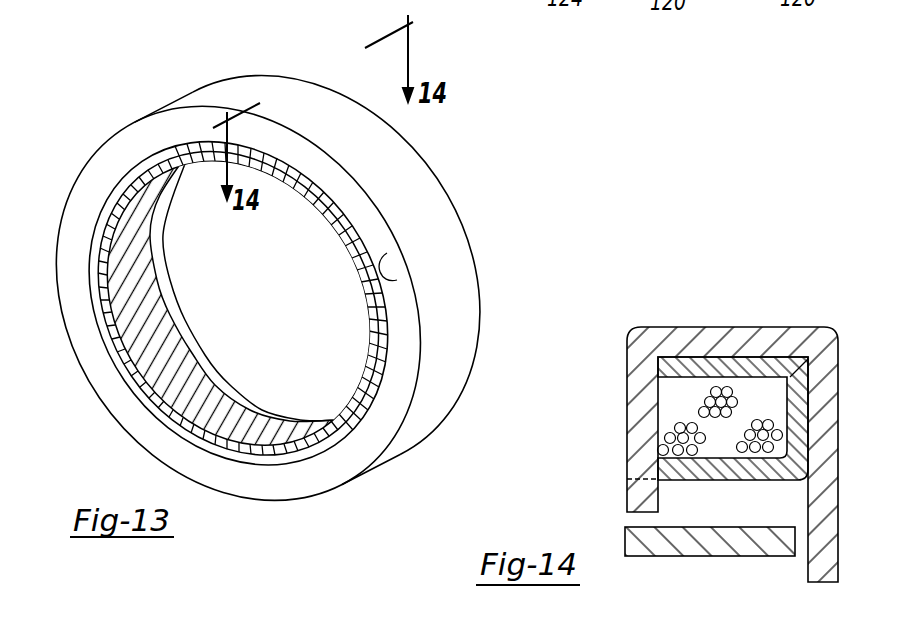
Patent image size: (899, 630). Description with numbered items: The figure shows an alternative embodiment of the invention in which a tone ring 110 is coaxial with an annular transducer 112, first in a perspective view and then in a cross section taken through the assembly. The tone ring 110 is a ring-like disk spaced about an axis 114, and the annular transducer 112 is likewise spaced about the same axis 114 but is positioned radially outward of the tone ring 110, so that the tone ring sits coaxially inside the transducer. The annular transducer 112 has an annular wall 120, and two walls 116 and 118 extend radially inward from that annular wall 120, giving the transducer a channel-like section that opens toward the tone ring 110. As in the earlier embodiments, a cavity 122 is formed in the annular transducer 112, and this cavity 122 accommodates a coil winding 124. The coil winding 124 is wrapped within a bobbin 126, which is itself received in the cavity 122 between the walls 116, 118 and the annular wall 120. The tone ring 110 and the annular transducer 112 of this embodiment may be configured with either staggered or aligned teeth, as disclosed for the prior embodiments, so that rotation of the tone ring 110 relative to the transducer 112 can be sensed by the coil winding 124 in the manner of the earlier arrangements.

In FIG. 13, the tone ring 110 is at (126, 244).
In FIG. 14, the tone ring 110 is at (683, 543).
In FIG. 13, the annular transducer 112 is at (397, 173).
In FIG. 13, the axis 114 is at (283, 276).
In FIG. 13, the wall 116 is at (393, 280).
In FIG. 14, the wall 116 is at (637, 383).
In FIG. 14, the wall 118 is at (832, 432).
In FIG. 13, the annular wall 120 is at (457, 302).
In FIG. 14, the annular wall 120 is at (755, 340).
In FIG. 14, the cavity 122 is at (767, 397).
In FIG. 14, the coil winding 124 is at (717, 392).
In FIG. 14, the bobbin 126 is at (677, 363).